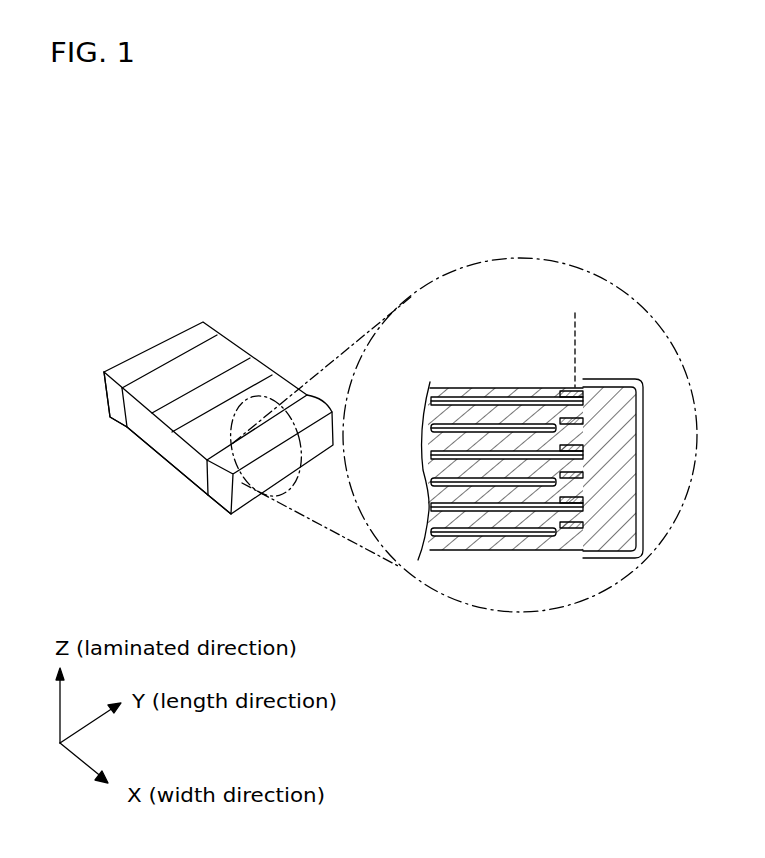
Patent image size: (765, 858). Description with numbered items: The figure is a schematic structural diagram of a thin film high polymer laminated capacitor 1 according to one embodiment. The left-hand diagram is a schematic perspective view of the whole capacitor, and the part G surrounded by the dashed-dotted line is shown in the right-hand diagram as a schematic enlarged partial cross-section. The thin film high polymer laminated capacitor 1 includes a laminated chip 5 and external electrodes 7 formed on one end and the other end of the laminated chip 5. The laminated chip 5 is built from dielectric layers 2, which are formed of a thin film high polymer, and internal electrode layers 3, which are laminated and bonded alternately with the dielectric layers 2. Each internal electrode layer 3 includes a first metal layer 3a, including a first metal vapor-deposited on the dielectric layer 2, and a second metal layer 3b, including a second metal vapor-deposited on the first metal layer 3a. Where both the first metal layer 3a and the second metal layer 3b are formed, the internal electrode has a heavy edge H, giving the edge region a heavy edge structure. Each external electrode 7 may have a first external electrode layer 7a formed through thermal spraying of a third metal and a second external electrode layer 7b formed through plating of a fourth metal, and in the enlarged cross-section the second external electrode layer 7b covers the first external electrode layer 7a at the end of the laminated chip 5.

The thin film high polymer laminated capacitor 1 is at (176, 283).
The dielectric layer 2 is at (455, 398).
The internal electrode layer 3 is at (500, 421).
The first metal layer 3a is at (497, 410).
The second metal layer 3b is at (563, 431).
The laminated chip 5 is at (165, 460).
The external electrode 7 is at (376, 434).
The first external electrode layer 7a is at (643, 342).
The second external electrode layer 7b is at (636, 383).
The part surrounded by the dashed-dotted line G is at (412, 292).
The heavy edge H is at (576, 339).